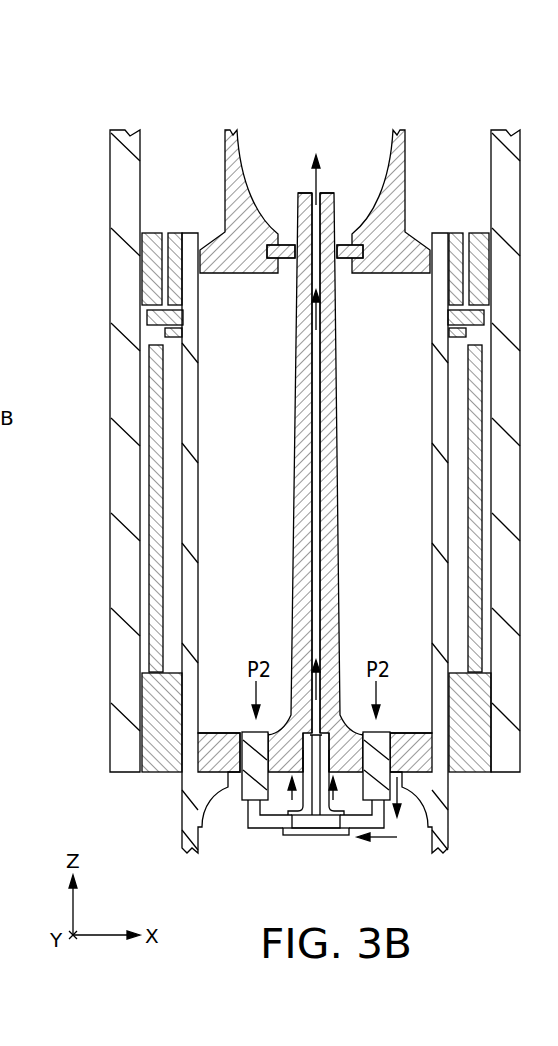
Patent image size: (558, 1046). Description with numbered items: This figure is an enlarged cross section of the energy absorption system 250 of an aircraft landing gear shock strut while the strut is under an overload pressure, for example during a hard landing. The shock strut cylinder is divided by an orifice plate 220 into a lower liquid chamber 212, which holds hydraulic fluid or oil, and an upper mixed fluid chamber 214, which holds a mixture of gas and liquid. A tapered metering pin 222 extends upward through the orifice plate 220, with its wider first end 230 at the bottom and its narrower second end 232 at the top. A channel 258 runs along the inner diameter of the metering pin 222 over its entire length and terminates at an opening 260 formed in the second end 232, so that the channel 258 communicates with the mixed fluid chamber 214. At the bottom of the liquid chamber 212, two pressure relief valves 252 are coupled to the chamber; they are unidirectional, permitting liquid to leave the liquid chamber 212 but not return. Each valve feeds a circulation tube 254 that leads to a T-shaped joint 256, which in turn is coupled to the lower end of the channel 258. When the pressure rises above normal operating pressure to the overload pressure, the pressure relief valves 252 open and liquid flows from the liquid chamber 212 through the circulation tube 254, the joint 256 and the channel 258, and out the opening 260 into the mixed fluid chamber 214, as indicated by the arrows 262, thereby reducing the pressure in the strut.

The energy absorption system 250 is at (74, 130).
The mixed fluid chamber 214 is at (446, 144).
The liquid chamber 212 is at (360, 388).
The orifice plate 220 is at (272, 249).
The metering pin 222 is at (327, 441).
The second end 232 is at (330, 192).
The channel 258 is at (316, 499).
The opening 260 is at (305, 183).
The first end 230 is at (341, 662).
The pressure relief valve 252 is at (373, 787).
The circulation tube 254 is at (258, 836).
The joint 256 is at (328, 838).
The arrows 262 is at (395, 857).